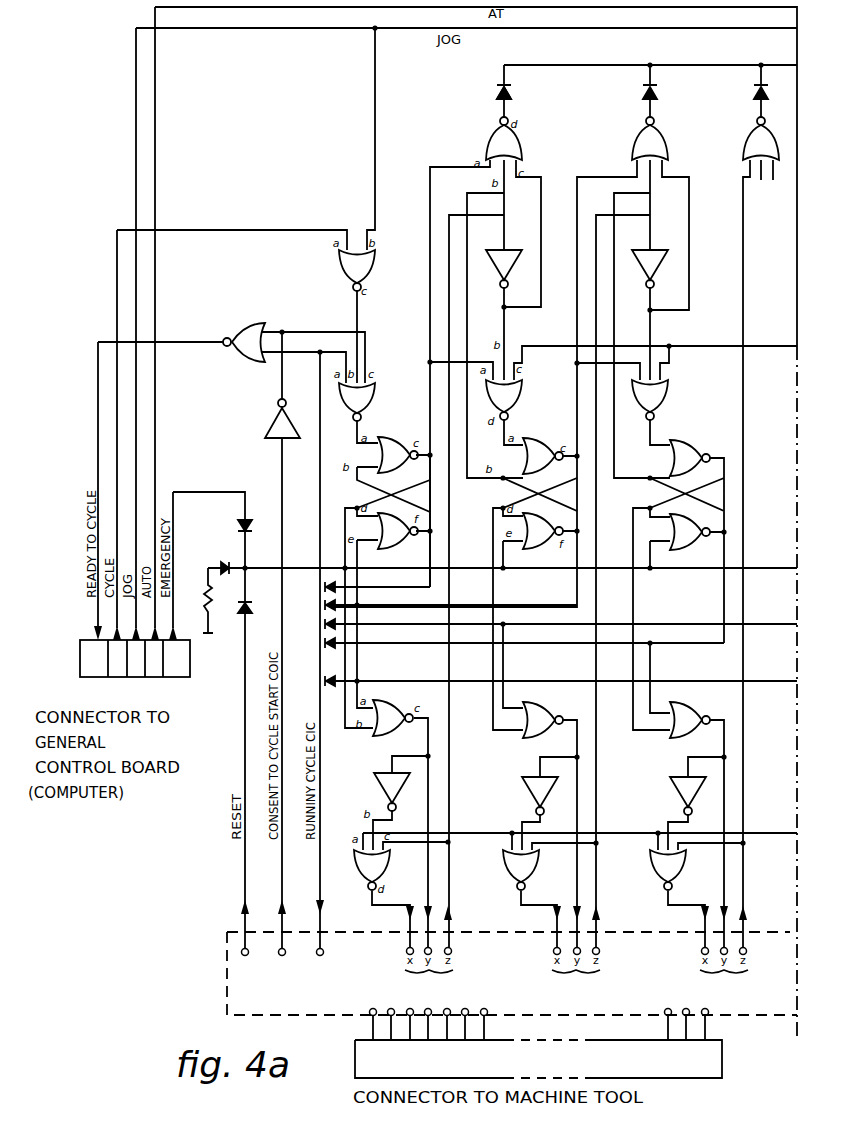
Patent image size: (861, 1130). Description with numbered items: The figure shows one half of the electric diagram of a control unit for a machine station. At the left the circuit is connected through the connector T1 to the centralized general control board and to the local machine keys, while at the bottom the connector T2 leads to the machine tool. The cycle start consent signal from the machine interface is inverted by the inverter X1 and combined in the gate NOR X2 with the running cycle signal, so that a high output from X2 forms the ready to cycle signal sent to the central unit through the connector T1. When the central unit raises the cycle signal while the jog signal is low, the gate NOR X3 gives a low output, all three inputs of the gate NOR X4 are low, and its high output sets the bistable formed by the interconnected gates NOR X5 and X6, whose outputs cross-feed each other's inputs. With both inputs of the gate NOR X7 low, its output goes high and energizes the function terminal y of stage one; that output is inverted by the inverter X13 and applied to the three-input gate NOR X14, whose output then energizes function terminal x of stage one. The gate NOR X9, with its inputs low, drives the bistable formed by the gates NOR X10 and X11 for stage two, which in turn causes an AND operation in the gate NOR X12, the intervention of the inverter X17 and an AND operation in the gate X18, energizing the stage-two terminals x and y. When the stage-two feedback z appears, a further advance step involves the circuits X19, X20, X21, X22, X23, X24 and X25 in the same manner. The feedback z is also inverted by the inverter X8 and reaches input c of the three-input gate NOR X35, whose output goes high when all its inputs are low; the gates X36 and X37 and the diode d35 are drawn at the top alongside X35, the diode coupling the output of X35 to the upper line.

The inverter X1 is at (282, 418).
The NOR gate X2 is at (244, 342).
The NOR gate X3 is at (357, 270).
The three-input NOR gate X4 is at (357, 402).
The NOR gate X5 is at (398, 455).
The NOR gate X6 is at (398, 531).
The NOR gate X7 is at (393, 718).
The inverter X8 is at (504, 269).
The NOR gate X9 is at (504, 400).
The NOR gate X10 is at (543, 456).
The NOR gate X11 is at (543, 531).
The NOR gate X12 is at (543, 720).
The inverter X13 is at (392, 792).
The three-input NOR gate X14 is at (372, 870).
The inverter X17 is at (540, 796).
The NOR gate X18 is at (521, 870).
The inverter X19 is at (650, 269).
The NOR gate X20 is at (650, 400).
The NOR gate X21 is at (690, 458).
The NOR gate X22 is at (690, 532).
The NOR gate X23 is at (690, 720).
The inverter X24 is at (688, 796).
The NOR gate X25 is at (668, 870).
The NOR gate X35 is at (504, 138).
The NOR gate X36 is at (650, 138).
The NOR gate X37 is at (761, 138).
The diode d35 is at (512, 90).
The connector T1 is at (135, 670).
The connector T2 is at (538, 1059).